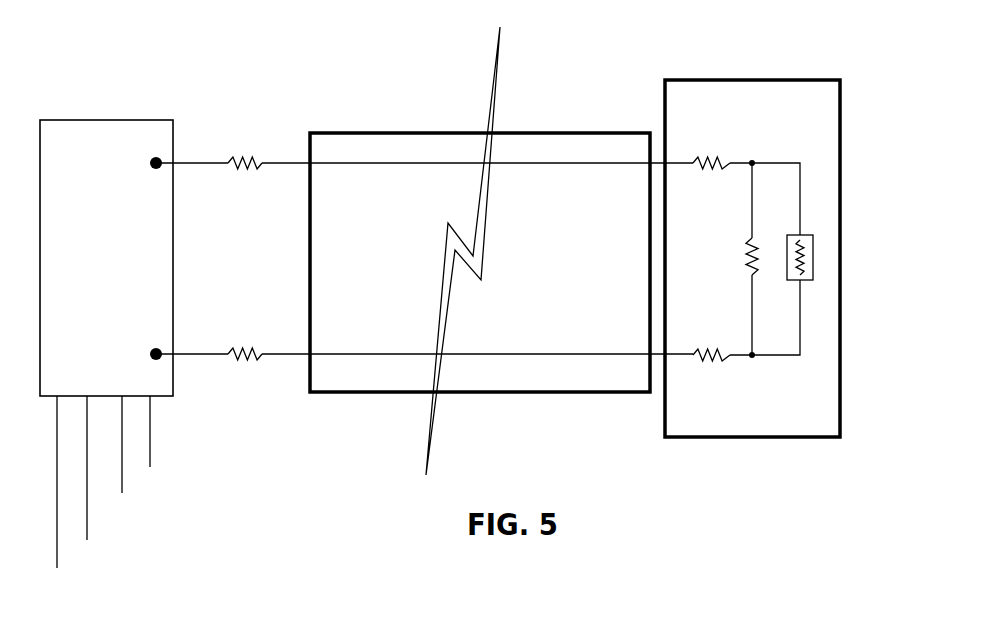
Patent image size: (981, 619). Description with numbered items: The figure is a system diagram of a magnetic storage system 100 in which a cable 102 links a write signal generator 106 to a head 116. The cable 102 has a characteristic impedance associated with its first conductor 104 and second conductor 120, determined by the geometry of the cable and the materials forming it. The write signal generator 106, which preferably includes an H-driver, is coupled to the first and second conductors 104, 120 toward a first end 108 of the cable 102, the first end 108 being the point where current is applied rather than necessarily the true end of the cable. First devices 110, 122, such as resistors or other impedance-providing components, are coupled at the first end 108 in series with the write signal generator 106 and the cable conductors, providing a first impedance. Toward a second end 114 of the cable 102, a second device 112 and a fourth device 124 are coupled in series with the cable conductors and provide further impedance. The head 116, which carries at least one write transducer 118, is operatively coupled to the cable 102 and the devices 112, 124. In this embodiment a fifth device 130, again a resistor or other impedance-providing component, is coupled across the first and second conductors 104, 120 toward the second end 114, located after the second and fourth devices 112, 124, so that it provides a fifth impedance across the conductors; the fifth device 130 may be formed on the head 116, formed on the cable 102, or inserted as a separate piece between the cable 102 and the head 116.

The magnetic storage system 100 is at (98, 88).
The cable 102 is at (425, 130).
The first conductor 104 is at (527, 162).
The write signal generator 106 is at (62, 120).
The first end 108 is at (333, 120).
The first device 110 is at (242, 153).
The second device 112 is at (710, 150).
The second end 114 is at (622, 118).
The head 116 is at (812, 80).
The write transducer 118 is at (813, 258).
The second conductor 120 is at (530, 357).
The first device 122 is at (238, 362).
The fourth device 124 is at (712, 362).
The fifth device 130 is at (746, 260).